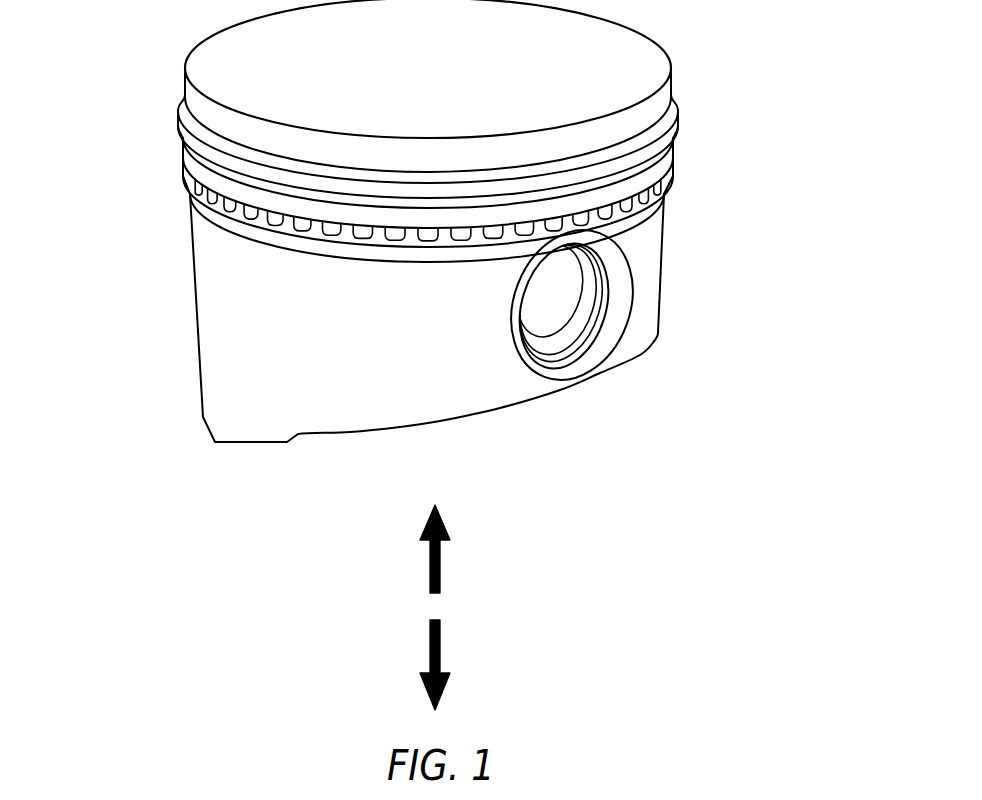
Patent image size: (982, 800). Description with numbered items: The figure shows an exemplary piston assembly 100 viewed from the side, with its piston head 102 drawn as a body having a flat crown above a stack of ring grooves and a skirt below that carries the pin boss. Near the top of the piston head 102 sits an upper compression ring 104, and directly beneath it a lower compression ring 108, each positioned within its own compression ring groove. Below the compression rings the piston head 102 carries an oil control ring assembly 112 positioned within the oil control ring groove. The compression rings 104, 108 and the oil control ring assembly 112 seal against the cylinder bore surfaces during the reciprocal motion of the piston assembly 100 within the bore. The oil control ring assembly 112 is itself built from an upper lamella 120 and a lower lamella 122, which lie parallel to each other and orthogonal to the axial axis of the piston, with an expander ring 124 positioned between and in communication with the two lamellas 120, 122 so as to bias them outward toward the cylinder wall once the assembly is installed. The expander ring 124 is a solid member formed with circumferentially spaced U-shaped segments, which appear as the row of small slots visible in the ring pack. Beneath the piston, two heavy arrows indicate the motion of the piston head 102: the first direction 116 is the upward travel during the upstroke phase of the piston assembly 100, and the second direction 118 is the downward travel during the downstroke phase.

The piston assembly 100 is at (733, 123).
The piston head 102 is at (427, 318).
The upper compression ring 104 is at (175, 103).
The lower compression ring 108 is at (173, 142).
The oil control ring assembly 112 is at (167, 185).
The first direction 116 is at (440, 563).
The second direction 118 is at (440, 645).
The upper lamella 120 is at (673, 166).
The lower lamella 122 is at (662, 202).
The expander ring 124 is at (672, 187).